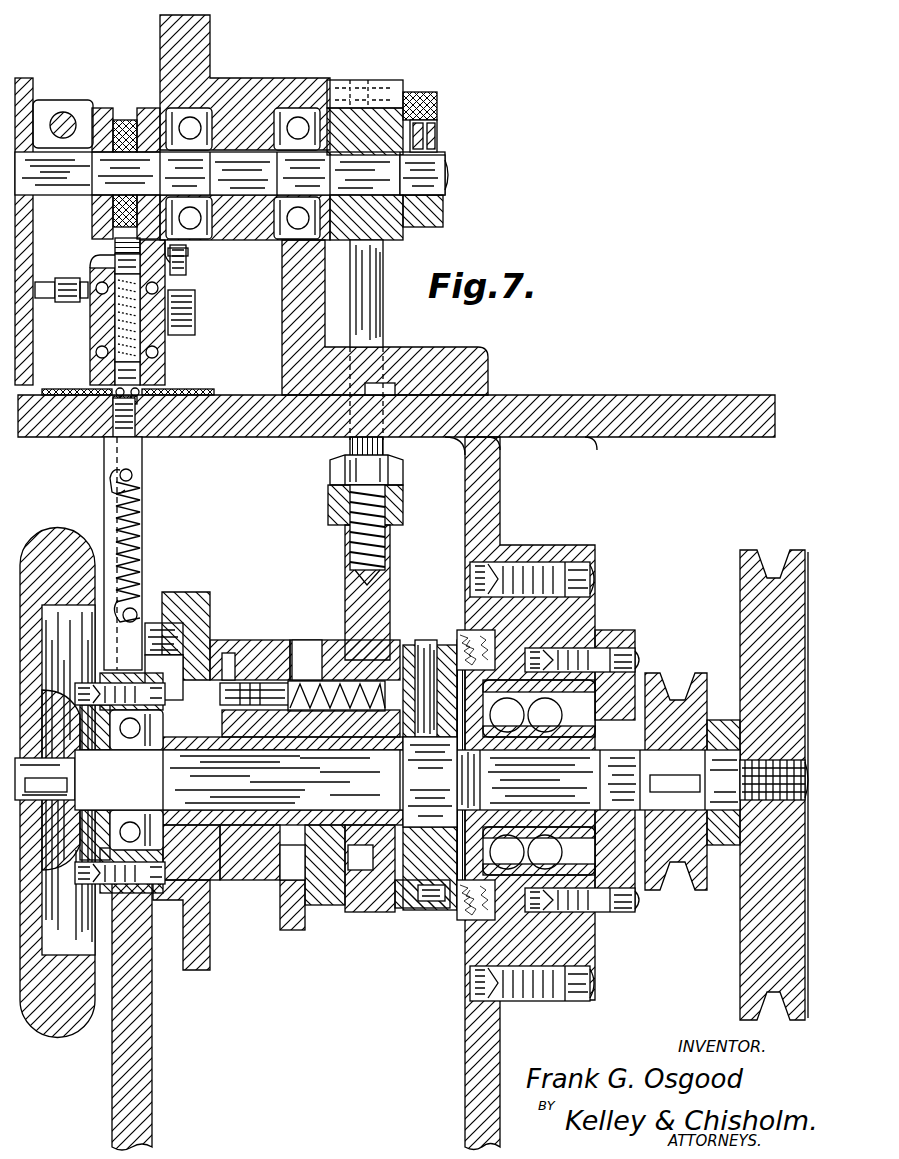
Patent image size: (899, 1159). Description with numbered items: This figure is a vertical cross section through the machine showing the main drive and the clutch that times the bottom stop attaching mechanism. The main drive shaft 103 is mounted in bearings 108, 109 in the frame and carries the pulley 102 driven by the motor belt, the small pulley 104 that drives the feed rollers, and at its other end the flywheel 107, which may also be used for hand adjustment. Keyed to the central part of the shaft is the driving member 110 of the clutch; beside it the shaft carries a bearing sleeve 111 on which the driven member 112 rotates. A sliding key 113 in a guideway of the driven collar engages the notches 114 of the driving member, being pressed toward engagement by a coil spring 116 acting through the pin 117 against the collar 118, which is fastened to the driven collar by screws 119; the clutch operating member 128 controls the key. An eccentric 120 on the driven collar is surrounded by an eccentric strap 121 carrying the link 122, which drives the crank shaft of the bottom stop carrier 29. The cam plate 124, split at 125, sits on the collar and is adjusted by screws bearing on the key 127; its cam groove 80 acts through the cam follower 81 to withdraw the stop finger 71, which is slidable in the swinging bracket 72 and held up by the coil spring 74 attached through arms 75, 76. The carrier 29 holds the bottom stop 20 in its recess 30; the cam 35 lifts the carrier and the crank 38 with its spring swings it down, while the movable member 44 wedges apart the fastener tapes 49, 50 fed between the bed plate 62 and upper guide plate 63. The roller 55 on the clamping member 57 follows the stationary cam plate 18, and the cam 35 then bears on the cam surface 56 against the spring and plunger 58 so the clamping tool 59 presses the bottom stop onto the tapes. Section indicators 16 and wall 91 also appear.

The section line indicator 16 is at (328, 605).
The stationary cam plate 18 is at (186, 262).
The bottom stop 20 is at (105, 390).
The bottom stop carrier 29 is at (160, 365).
The recess 30 is at (120, 408).
The cam 35 is at (124, 128).
The crank 38 is at (45, 115).
The movable member 44 is at (112, 440).
The slide fastener tape 49 is at (198, 391).
The slide fastener tape 50 is at (95, 392).
The roller 55 is at (186, 330).
The cam surface 56 is at (130, 244).
The clamping member 57 is at (128, 262).
The spring and plunger 58 is at (125, 298).
The clamping tool 59 is at (140, 372).
The bed plate 62 is at (436, 172).
The upper guide plate 63 is at (262, 437).
The stop finger 71 is at (135, 462).
The swinging bracket 72 is at (112, 482).
The coil spring 74 is at (136, 522).
The arm 75 is at (138, 610).
The arm 76 is at (132, 475).
The cam groove 80 is at (182, 665).
The cam follower 81 is at (170, 637).
The side wall 91 is at (25, 372).
The pulley 102 is at (775, 590).
The main drive shaft 103 is at (722, 662).
The small pulley 104 is at (685, 712).
The flywheel 107 is at (58, 1017).
The bearing 108 is at (150, 890).
The bearing 109 is at (472, 940).
The driving member 110 is at (432, 897).
The bearing sleeve 111 is at (382, 895).
The driven member 112 is at (320, 892).
The sliding key 113 is at (385, 668).
The notches 114 is at (400, 896).
The coil spring 116 is at (327, 665).
The pin 117 is at (272, 665).
The collar 118 is at (220, 645).
The screws 119 is at (242, 882).
The eccentric 120 is at (378, 612).
The eccentric strap 121 is at (388, 578).
The link 122 is at (368, 338).
The cam plate 124 is at (196, 600).
The split 125 is at (385, 115).
The key 127 is at (236, 660).
The clutch operating member 128 is at (262, 890).